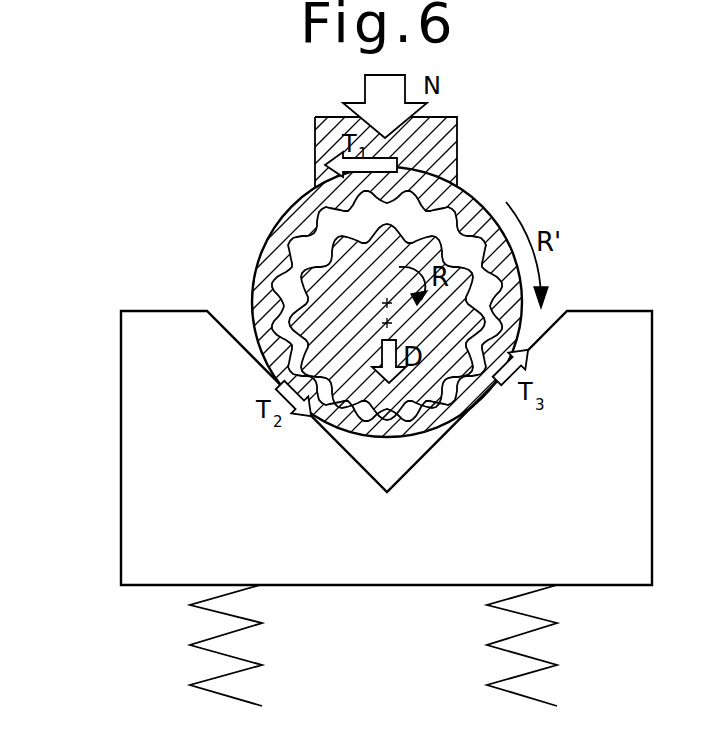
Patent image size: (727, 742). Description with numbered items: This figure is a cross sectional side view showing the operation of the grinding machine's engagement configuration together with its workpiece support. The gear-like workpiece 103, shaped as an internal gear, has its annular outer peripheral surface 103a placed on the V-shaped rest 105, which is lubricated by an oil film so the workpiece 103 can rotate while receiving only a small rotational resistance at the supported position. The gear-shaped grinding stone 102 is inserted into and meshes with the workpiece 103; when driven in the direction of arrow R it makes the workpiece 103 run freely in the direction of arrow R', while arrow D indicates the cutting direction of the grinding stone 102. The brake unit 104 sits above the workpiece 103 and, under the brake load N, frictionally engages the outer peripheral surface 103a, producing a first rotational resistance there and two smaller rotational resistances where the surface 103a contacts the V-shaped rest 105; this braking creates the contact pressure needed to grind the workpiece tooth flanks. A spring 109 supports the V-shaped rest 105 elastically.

The gear-shaped grinding stone 102 is at (327, 303).
The gear-like workpiece 103 is at (276, 233).
The outer peripheral surface 103a is at (294, 204).
The brake unit 104 is at (316, 140).
The V-shaped rest 105 is at (148, 443).
The spring 109 is at (204, 640).